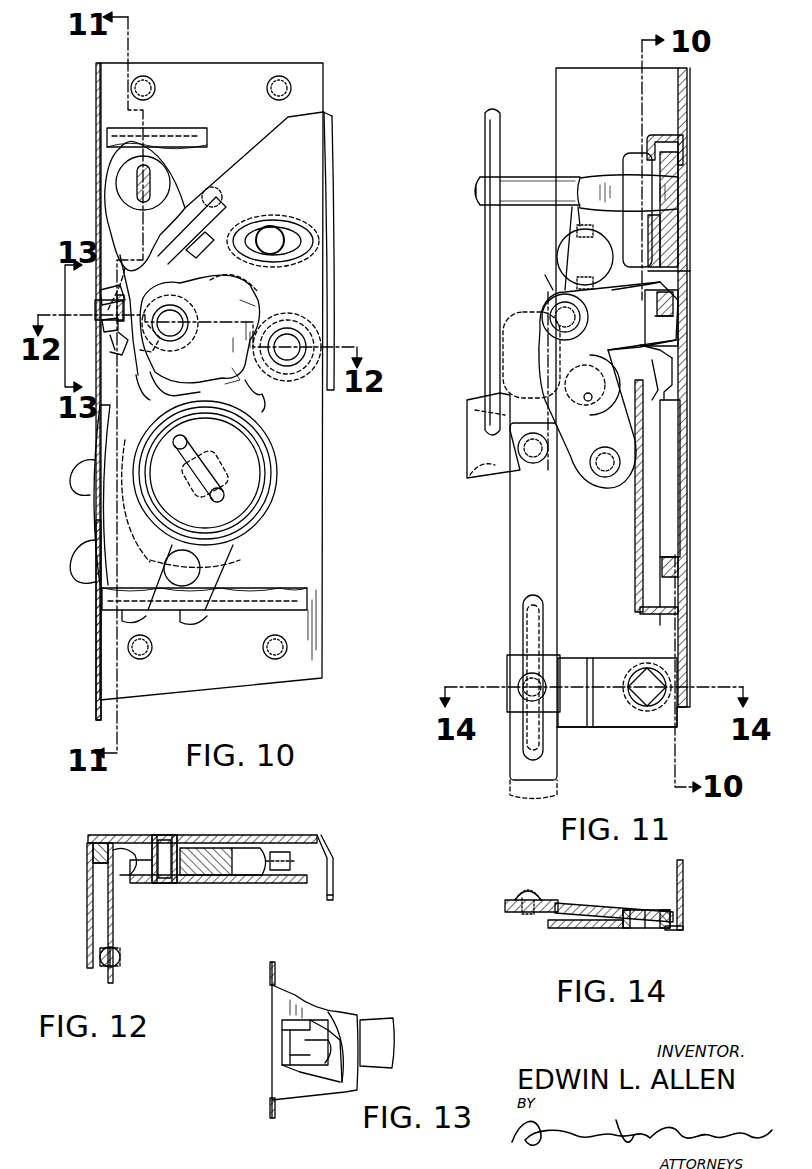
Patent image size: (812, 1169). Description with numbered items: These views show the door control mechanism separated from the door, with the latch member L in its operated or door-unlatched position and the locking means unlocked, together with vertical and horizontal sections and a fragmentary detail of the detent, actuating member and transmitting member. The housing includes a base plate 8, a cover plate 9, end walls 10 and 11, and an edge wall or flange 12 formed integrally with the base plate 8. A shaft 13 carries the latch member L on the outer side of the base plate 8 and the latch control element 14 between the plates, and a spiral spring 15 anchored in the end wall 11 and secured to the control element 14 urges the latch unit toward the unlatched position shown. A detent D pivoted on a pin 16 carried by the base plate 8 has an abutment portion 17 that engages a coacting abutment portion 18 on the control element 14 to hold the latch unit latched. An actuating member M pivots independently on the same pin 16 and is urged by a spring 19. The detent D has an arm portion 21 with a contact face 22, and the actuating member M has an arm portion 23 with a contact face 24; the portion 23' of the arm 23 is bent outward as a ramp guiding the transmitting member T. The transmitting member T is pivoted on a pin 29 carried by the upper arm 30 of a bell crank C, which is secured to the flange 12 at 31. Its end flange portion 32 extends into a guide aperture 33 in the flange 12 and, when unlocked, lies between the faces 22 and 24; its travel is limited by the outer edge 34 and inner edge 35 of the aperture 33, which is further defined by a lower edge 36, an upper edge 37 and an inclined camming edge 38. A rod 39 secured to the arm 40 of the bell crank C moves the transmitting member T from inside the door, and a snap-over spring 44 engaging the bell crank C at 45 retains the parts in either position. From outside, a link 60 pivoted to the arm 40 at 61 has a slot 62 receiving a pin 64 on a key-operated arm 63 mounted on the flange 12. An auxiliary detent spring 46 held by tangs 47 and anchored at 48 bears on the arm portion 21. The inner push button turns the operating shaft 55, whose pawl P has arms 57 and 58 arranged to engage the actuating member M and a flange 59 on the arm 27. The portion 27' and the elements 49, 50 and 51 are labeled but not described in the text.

In FIG. 10, the base plate 8 is at (323, 88).
In FIG. 11, the base plate 8 is at (690, 398).
In FIG. 12, the base plate 8 is at (97, 835).
In FIG. 13, the base plate 8 is at (270, 975).
In FIG. 14, the base plate 8 is at (682, 882).
In FIG. 10, the cover plate 9 is at (207, 139).
In FIG. 11, the cover plate 9 is at (635, 525).
In FIG. 12, the cover plate 9 is at (250, 883).
In FIG. 10, the end wall 10 is at (172, 131).
In FIG. 11, the end wall 10 is at (662, 135).
In FIG. 10, the end wall 11 is at (250, 612).
In FIG. 11, the end wall 11 is at (659, 622).
In FIG. 10, the edge wall or flange 12 is at (96, 105).
In FIG. 11, the edge wall or flange 12 is at (610, 76).
In FIG. 12, the edge wall or flange 12 is at (87, 958).
In FIG. 13, the edge wall or flange 12 is at (286, 995).
In FIG. 14, the edge wall or flange 12 is at (584, 929).
In FIG. 10, the shaft 13 is at (224, 466).
In FIG. 10, the latch control element 14 is at (125, 440).
In FIG. 10, the spiral spring 15 is at (252, 453).
In FIG. 10, the pin 16 is at (174, 312).
In FIG. 12, the pin 16 is at (165, 845).
In FIG. 10, the abutment portion 17 is at (155, 392).
In FIG. 10, the coacting abutment portion 18 is at (258, 395).
In FIG. 10, the spring 19 is at (96, 540).
In FIG. 11, the spring 19 is at (676, 462).
In FIG. 10, the arm portion 21 is at (117, 244).
In FIG. 11, the arm portion 21 is at (678, 296).
In FIG. 13, the arm portion 21 is at (282, 1025).
In FIG. 10, the contact face 22 is at (95, 306).
In FIG. 11, the contact face 22 is at (690, 310).
In FIG. 13, the contact face 22 is at (282, 1034).
In FIG. 10, the arm portion 23 is at (117, 353).
In FIG. 11, the ramp portion 23' is at (692, 380).
In FIG. 13, the ramp portion 23' is at (268, 1083).
In FIG. 10, the contact face 24 is at (112, 355).
In FIG. 11, the contact face 24 is at (672, 348).
In FIG. 12, the contact face 24 is at (95, 866).
In FIG. 13, the contact face 24 is at (327, 1056).
In FIG. 10, the arm 27 is at (346, 251).
In FIG. 12, the arm 27 is at (342, 867).
In FIG. 10, the flange lip 27' is at (349, 151).
In FIG. 12, the flange lip 27' is at (358, 888).
In FIG. 11, the pin 29 is at (556, 307).
In FIG. 12, the pin 29 is at (121, 957).
In FIG. 11, the upper arm 30 is at (540, 336).
In FIG. 11, the pivot 31 is at (603, 479).
In FIG. 10, the end flange portion 32 is at (104, 322).
In FIG. 11, the end flange portion 32 is at (680, 317).
In FIG. 12, the end flange portion 32 is at (93, 853).
In FIG. 13, the end flange portion 32 is at (282, 1046).
In FIG. 10, the guide aperture 33 is at (96, 289).
In FIG. 13, the guide aperture 33 is at (322, 1036).
In FIG. 11, the outer edge 34 is at (680, 336).
In FIG. 13, the outer edge 34 is at (283, 1058).
In FIG. 13, the inner edge 35 is at (358, 1062).
In FIG. 11, the lower edge 36 is at (637, 334).
In FIG. 13, the lower edge 36 is at (318, 1094).
In FIG. 13, the upper edge 37 is at (306, 1020).
In FIG. 11, the inclined camming edge 38 is at (650, 306).
In FIG. 13, the inclined camming edge 38 is at (345, 1042).
In FIG. 11, the rod 39 is at (490, 244).
In FIG. 11, the arm 40 is at (478, 475).
In FIG. 11, the snap-over spring 44 is at (592, 385).
In FIG. 11, the engagement point 45 is at (589, 401).
In FIG. 10, the auxiliary detent spring 46 is at (150, 266).
In FIG. 11, the auxiliary detent spring 46 is at (690, 271).
In FIG. 11, the tangs 47 is at (590, 226).
In FIG. 11, the anchor point 48 is at (572, 200).
In FIG. 10, the pin 49 is at (288, 335).
In FIG. 12, the pin 49 is at (281, 852).
In FIG. 10, the pin 50 is at (269, 232).
In FIG. 10, the slot 51 is at (287, 232).
In FIG. 11, the operating shaft 55 is at (540, 185).
In FIG. 10, the arm 57 is at (118, 228).
In FIG. 11, the arm 57 is at (688, 242).
In FIG. 10, the arm 58 is at (212, 187).
In FIG. 10, the flange 59 is at (232, 284).
In FIG. 12, the flange 59 is at (228, 850).
In FIG. 11, the link 60 is at (508, 511).
In FIG. 14, the link 60 is at (514, 913).
In FIG. 11, the pivot 61 is at (580, 470).
In FIG. 11, the slot 62 is at (525, 731).
In FIG. 11, the arm 63 is at (612, 717).
In FIG. 14, the arm 63 is at (605, 907).
In FIG. 11, the pin 64 is at (518, 682).
In FIG. 14, the pin 64 is at (540, 888).
In FIG. 10, the pawl P is at (110, 190).
In FIG. 10, the transmitting member T is at (104, 315).
In FIG. 11, the transmitting member T is at (548, 275).
In FIG. 12, the transmitting member T is at (113, 918).
In FIG. 13, the transmitting member T is at (393, 1045).
In FIG. 10, the detent D is at (172, 276).
In FIG. 12, the detent D is at (135, 850).
In FIG. 10, the actuating member M is at (230, 370).
In FIG. 12, the actuating member M is at (203, 880).
In FIG. 10, the latch member L is at (85, 585).
In FIG. 11, the bell crank C is at (540, 378).